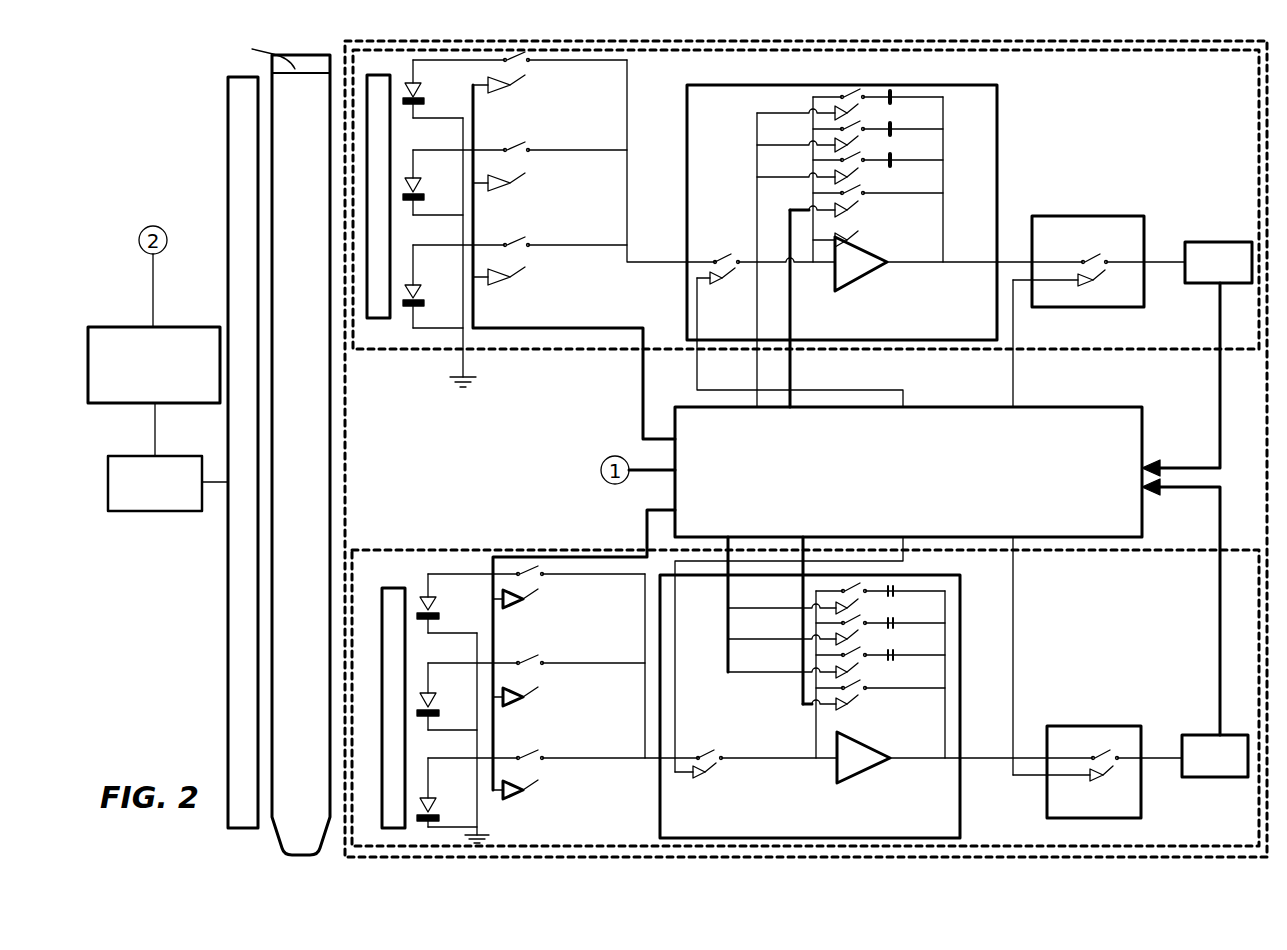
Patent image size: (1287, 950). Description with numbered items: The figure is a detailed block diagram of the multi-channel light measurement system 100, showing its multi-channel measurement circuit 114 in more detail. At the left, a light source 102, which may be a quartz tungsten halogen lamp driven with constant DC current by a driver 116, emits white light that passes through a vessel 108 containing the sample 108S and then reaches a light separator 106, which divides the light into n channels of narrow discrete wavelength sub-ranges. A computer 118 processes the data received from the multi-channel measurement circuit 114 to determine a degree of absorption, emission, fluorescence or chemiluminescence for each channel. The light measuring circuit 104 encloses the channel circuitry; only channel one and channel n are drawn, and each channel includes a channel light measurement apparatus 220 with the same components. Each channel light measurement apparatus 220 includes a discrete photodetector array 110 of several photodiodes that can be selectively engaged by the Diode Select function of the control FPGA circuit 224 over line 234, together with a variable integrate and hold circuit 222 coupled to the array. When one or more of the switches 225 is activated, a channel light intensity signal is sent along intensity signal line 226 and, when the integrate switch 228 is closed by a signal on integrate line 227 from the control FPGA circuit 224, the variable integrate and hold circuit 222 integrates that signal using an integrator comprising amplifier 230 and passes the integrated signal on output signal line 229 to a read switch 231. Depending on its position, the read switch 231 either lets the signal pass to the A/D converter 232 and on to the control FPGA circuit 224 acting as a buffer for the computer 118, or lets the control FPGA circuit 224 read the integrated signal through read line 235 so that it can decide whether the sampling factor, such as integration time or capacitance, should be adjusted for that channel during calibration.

The multi-channel light measurement system 100 is at (176, 624).
The light source 102 is at (227, 210).
The light measuring circuit 104 is at (360, 470).
The light separator 106 is at (378, 320).
The vessel 108 is at (330, 392).
The sample 108S is at (242, 52).
The discrete photodetector array 110 is at (513, 376).
The multi-channel measurement circuit 114 is at (572, 447).
The driver 116 is at (172, 512).
The computer 118 is at (172, 327).
The channel light measurement apparatus 220 is at (1173, 66).
The variable integrate and hold circuit 222 is at (997, 165).
The control FPGA circuit 224 is at (1098, 407).
The switches 225 is at (537, 73).
The intensity signal line 226 is at (670, 262).
The integrate line 227 is at (845, 390).
The integrate switch 228 is at (740, 226).
The output signal line 229 is at (1012, 262).
The amplifier 230 is at (870, 252).
The read switch 231 is at (1090, 216).
The A/D converter 232 is at (1222, 242).
The line 234 is at (643, 376).
The read line 235 is at (1013, 333).